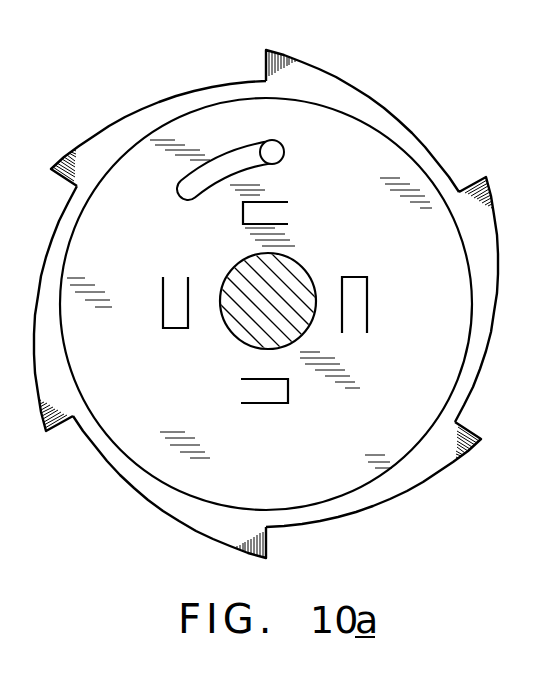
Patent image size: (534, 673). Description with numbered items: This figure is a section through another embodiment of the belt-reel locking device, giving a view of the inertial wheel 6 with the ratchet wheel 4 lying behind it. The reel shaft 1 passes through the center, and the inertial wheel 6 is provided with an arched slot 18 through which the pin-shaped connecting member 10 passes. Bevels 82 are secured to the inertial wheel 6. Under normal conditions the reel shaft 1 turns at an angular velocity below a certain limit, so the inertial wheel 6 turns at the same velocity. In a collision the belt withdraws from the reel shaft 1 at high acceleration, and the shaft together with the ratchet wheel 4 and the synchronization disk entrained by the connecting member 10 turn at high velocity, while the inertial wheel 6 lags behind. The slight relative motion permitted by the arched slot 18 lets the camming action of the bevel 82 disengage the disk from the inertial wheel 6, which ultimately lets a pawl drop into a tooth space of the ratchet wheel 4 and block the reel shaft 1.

The ratchet wheel 4 is at (218, 92).
The inertial wheel 6 is at (350, 136).
The arched slot 18 is at (224, 153).
The pin-shaped connecting member 10 is at (278, 148).
The reel shaft 1 is at (249, 330).
The bevel 82 is at (282, 398).